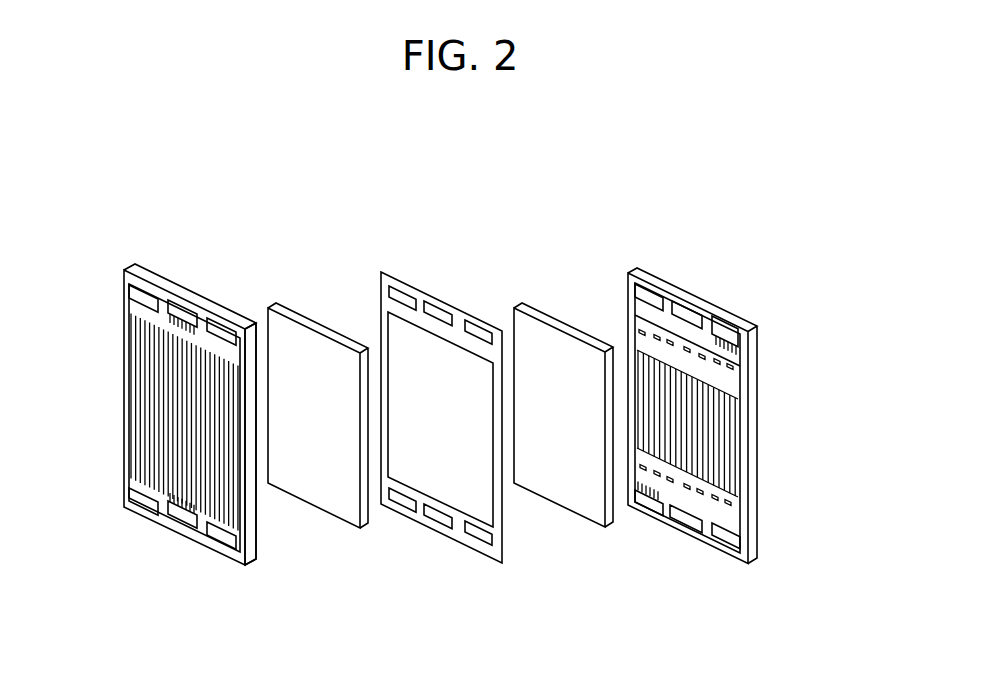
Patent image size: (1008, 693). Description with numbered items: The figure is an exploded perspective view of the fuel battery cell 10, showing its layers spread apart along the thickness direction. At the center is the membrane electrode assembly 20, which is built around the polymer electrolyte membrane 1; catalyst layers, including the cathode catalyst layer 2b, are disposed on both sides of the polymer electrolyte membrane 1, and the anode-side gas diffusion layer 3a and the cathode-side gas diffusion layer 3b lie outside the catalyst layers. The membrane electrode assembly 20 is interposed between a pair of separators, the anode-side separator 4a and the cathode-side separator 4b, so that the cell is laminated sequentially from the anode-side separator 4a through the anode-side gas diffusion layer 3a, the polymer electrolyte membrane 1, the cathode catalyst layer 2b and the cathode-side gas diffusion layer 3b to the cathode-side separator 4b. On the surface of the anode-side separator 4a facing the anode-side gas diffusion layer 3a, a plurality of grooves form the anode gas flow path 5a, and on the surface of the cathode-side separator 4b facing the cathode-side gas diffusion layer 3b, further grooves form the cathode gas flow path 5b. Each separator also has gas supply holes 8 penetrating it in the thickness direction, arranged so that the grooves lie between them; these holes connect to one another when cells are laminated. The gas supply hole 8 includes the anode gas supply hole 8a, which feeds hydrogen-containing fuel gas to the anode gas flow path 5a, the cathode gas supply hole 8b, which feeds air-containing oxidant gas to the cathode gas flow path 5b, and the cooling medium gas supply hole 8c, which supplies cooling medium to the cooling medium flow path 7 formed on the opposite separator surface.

The fuel battery cell 10 is at (252, 218).
The membrane electrode assembly 20 is at (430, 562).
The polymer electrolyte membrane 1 is at (419, 301).
The cathode catalyst layer 2b is at (397, 343).
The anode-side gas diffusion layer 3a is at (552, 348).
The cathode-side gas diffusion layer 3b is at (316, 345).
The anode-side separator 4a is at (752, 419).
The cathode-side separator 4b is at (123, 358).
The anode gas flow path 5a is at (730, 465).
The cathode gas flow path 5b is at (258, 508).
The cooling medium flow path 7 is at (150, 406).
The gas supply hole 8 is at (120, 268).
The anode gas supply hole 8a is at (222, 330).
The cathode gas supply hole 8b is at (142, 292).
The cooling medium gas supply hole 8c is at (182, 312).